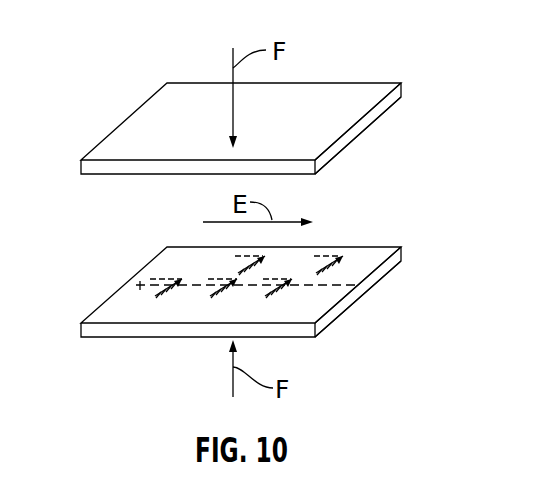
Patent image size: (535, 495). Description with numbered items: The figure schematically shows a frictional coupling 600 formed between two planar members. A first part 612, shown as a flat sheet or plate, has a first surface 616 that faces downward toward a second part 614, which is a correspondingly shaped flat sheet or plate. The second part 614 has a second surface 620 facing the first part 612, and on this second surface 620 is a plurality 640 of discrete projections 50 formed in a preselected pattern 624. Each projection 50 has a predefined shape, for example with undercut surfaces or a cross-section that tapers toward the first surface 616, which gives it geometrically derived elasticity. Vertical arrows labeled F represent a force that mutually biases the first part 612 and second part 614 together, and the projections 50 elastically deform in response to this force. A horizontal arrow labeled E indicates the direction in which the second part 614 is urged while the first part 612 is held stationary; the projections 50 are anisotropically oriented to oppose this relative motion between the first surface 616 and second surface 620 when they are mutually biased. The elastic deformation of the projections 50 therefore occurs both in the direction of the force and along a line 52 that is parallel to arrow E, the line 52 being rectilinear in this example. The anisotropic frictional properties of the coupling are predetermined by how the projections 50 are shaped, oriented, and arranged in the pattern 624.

The frictional coupling 600 is at (247, 305).
The first part 612 is at (351, 92).
The first surface 616 is at (358, 138).
The second surface 620 is at (360, 272).
The second part 614 is at (374, 296).
The preselected pattern 624 is at (100, 216).
The projections 50 is at (158, 282).
The line 52 is at (138, 289).
The plurality of discrete projections 640 is at (156, 296).